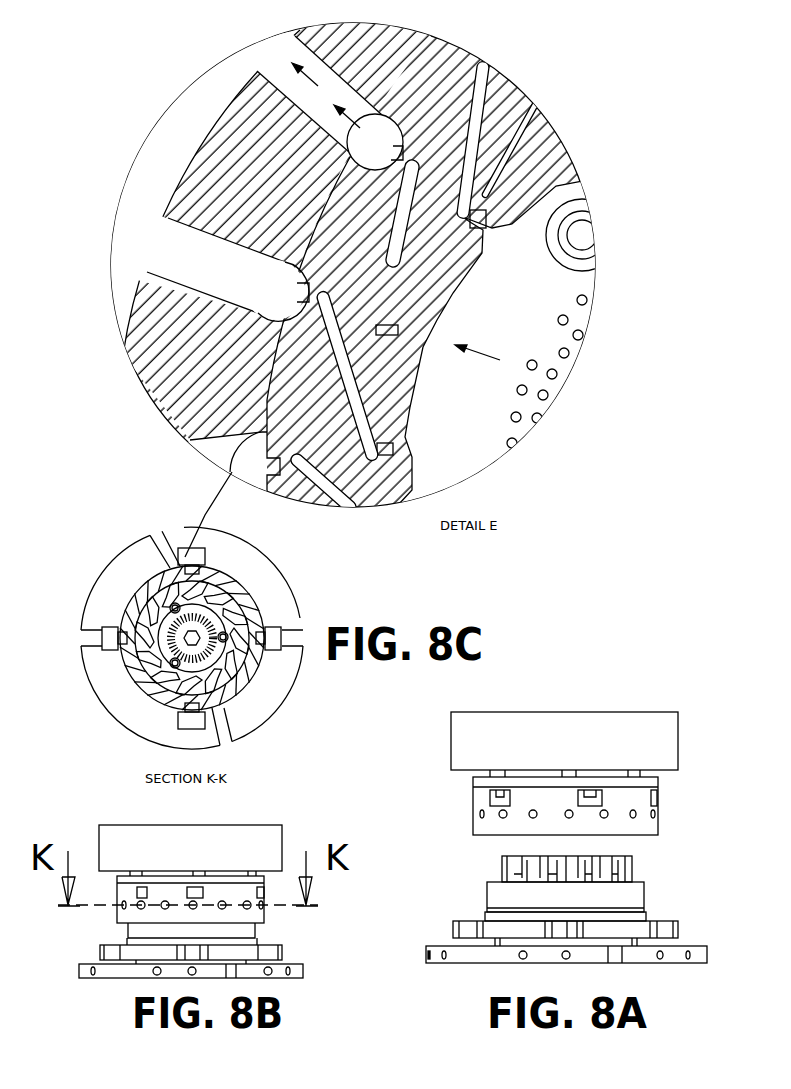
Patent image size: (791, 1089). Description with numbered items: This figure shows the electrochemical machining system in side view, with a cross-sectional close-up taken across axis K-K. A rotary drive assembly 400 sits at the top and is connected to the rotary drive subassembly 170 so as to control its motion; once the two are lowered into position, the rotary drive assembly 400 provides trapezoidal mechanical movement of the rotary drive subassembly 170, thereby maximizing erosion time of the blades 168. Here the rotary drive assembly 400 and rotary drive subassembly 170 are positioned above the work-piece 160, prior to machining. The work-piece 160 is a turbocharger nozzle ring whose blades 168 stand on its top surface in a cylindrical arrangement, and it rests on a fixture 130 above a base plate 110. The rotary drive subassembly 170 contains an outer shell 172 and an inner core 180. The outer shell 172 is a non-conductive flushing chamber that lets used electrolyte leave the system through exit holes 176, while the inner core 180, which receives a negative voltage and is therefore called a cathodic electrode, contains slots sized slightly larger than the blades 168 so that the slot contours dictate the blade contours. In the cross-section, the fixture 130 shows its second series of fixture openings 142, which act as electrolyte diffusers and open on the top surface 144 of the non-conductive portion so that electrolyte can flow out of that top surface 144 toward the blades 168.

In FIG. 8A, the base plate 110 is at (716, 948).
In FIG. 8A, the fixture 130 is at (688, 910).
In FIG. 8C, the second series of fixture openings 142 is at (521, 361).
In FIG. 8C, the top surface 144 is at (525, 313).
In FIG. 8A, the work-piece 160 is at (645, 858).
In FIG. 8C, the blades 168 is at (407, 220).
In FIG. 8A, the rotary drive subassembly 170 is at (667, 807).
In FIG. 8C, the outer shell 172 is at (365, 45).
In FIG. 8C, the exit holes 176 is at (252, 50).
In FIG. 8C, the inner core 180 is at (492, 98).
In FIG. 8A, the rotary drive assembly 400 is at (513, 700).